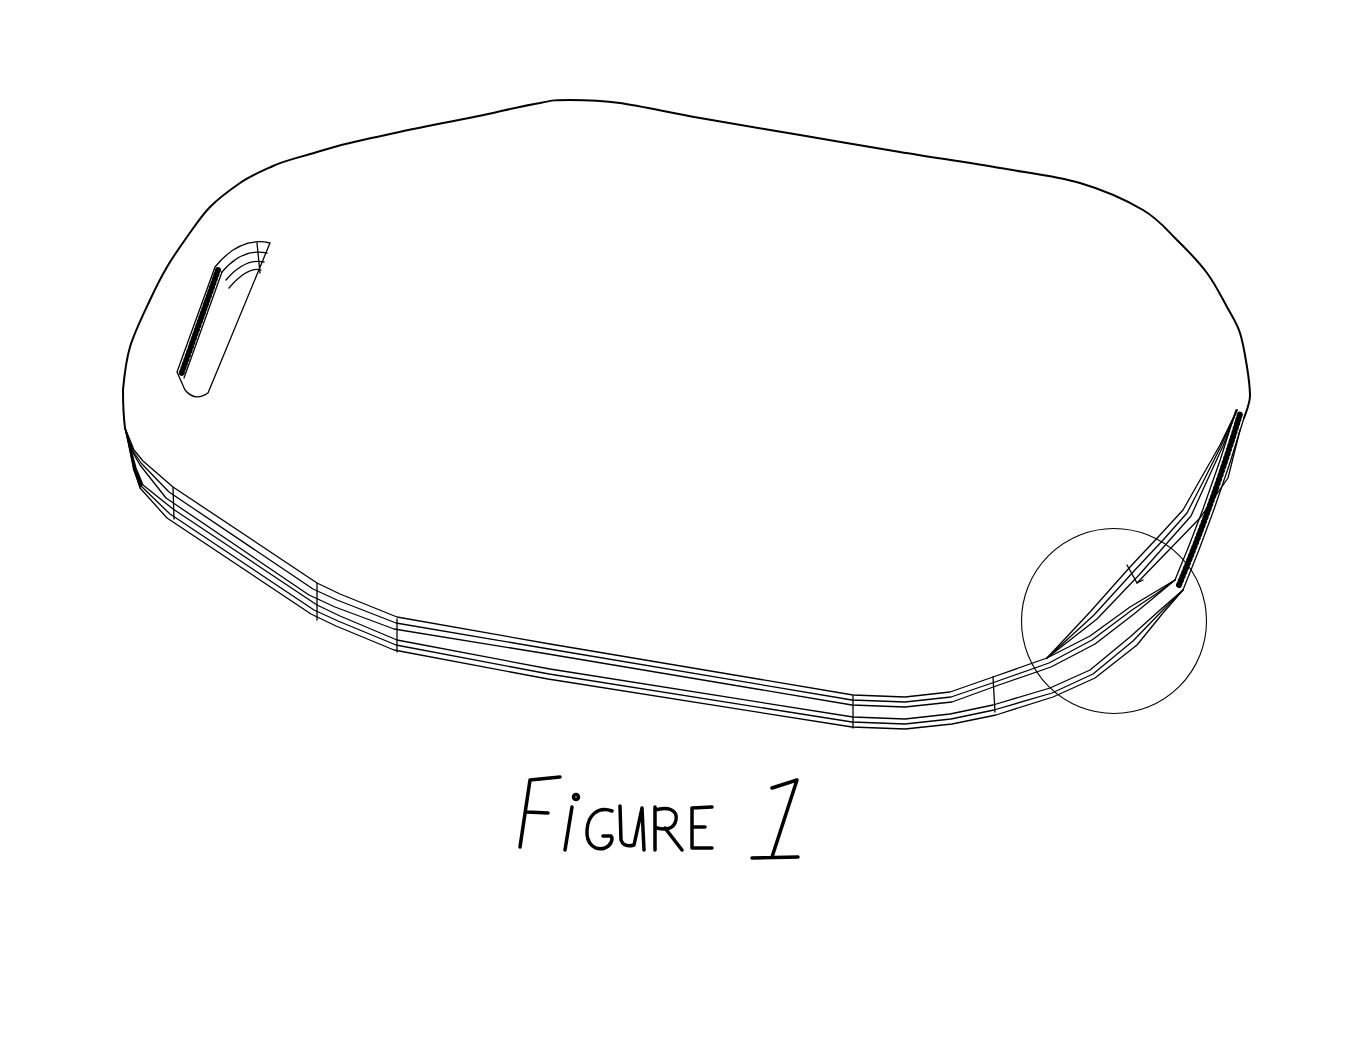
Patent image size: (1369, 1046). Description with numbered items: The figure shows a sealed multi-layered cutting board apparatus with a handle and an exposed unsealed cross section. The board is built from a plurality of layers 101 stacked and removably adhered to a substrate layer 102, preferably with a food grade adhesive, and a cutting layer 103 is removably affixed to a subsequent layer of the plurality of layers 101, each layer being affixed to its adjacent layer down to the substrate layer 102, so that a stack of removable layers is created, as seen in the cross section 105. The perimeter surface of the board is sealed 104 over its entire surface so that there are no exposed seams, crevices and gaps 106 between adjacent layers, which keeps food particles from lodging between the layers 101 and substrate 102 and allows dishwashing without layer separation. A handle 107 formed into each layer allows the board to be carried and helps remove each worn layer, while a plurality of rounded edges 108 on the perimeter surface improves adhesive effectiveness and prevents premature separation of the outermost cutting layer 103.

The plurality of layers 101 is at (1028, 720).
The substrate layer 102 is at (1213, 480).
The cutting layer 103 is at (1200, 520).
The sealed perimeter surface 104 is at (347, 620).
The cross section 105 is at (1208, 633).
The seams, crevices and gaps 106 is at (1086, 678).
The handle 107 is at (236, 263).
The rounded edges 108 is at (726, 264).